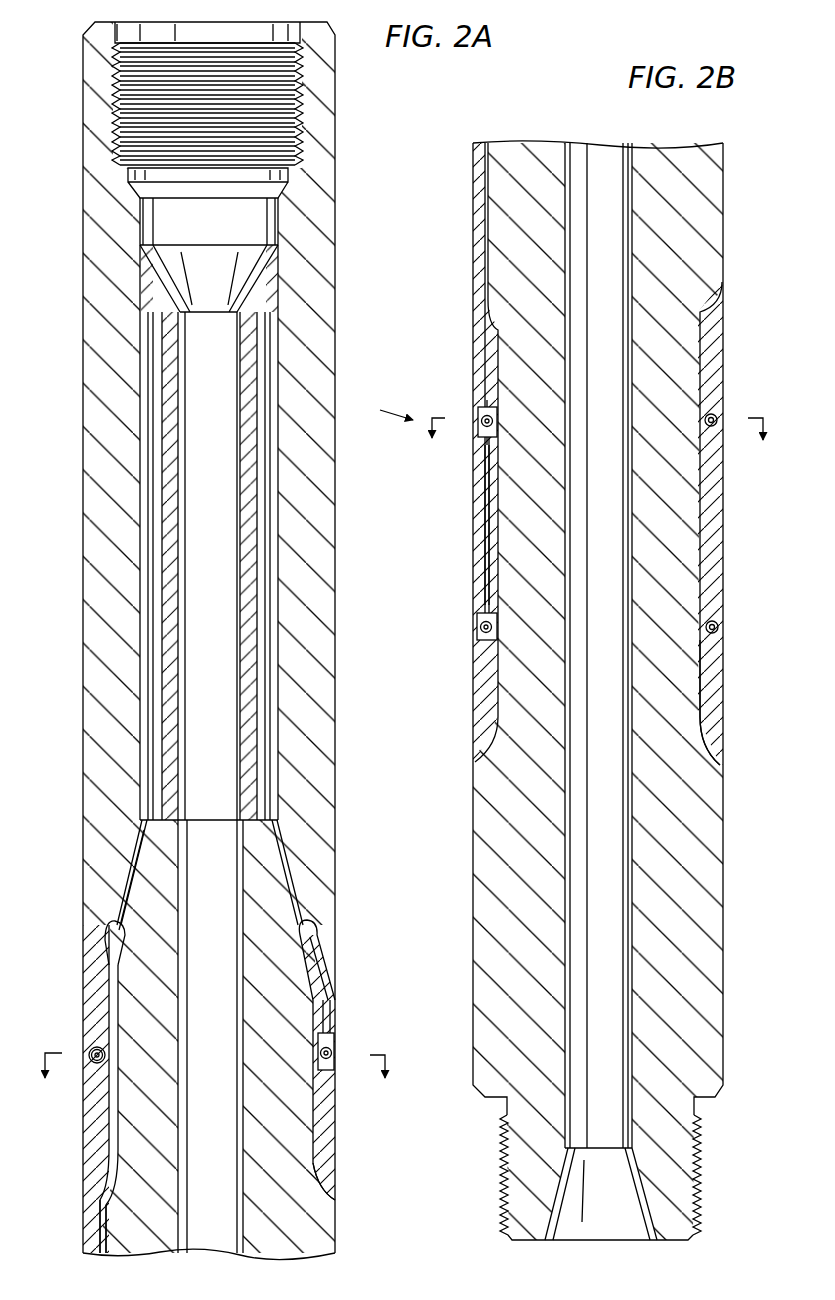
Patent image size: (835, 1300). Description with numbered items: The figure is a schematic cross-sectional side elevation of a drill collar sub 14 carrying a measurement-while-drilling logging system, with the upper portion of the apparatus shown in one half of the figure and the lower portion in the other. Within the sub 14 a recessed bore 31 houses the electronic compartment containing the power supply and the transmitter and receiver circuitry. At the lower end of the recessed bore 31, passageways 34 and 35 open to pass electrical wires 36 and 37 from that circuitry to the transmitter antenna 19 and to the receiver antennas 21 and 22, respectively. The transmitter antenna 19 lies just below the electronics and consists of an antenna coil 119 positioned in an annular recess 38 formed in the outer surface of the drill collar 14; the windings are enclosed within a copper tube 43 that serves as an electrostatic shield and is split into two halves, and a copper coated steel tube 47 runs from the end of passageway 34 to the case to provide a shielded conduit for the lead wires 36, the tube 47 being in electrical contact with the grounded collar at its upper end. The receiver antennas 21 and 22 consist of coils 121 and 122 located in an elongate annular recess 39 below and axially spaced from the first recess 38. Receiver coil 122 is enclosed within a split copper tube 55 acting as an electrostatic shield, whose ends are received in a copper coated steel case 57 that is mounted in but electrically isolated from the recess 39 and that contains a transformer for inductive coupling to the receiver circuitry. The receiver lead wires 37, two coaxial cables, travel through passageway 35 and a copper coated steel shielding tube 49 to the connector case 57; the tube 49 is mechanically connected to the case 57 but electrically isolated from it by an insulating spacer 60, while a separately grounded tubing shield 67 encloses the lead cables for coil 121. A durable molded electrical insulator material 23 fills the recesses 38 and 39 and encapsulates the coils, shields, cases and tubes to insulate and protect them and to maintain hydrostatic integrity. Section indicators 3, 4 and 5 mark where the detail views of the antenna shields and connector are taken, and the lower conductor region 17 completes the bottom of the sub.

In FIG. 2A, the section line 3- 3 is at (211, 1078).
In FIG. 2B, the electrical connector assembly 4 is at (385, 408).
In FIG. 2B, the section line 5- 5 is at (596, 443).
In FIG. 2A, the sub 14 is at (66, 270).
In FIG. 2A, the lower conductor strip 17 is at (183, 1180).
In FIG. 2A, the transmitter antenna 19 is at (77, 1026).
In FIG. 2B, the receiver antenna 21 is at (730, 605).
In FIG. 2B, the receiver antenna 22 is at (727, 397).
In FIG. 2A, the electrical insulator material 23 is at (330, 1162).
In FIG. 2B, the electrical insulator material 23 is at (715, 718).
In FIG. 2A, the recessed bore 31 is at (273, 222).
In FIG. 2A, the passageway 34 is at (290, 837).
In FIG. 2A, the passageway 35 is at (136, 835).
In FIG. 2A, the electrical wires 36 is at (290, 870).
In FIG. 2A, the receiver lead wires 37 is at (141, 878).
In FIG. 2A, the annular recess 38 is at (320, 1130).
In FIG. 2B, the elongate annular recess 39 is at (700, 675).
In FIG. 2A, the copper tube 43 is at (95, 1053).
In FIG. 2A, the copper coated steel tube 47 is at (335, 970).
In FIG. 2A, the copper coated steel shielding tube 49 is at (111, 949).
In FIG. 2B, the copper tube 55 is at (478, 633).
In FIG. 2B, the copper coated steel case 57 is at (475, 412).
In FIG. 2B, the insulating spacer 60 is at (478, 405).
In FIG. 2B, the tubing shield 67 is at (483, 548).
In FIG. 2A, the antenna coil 119 is at (87, 1067).
In FIG. 2B, the coil 121 is at (717, 628).
In FIG. 2B, the coil 122 is at (720, 418).